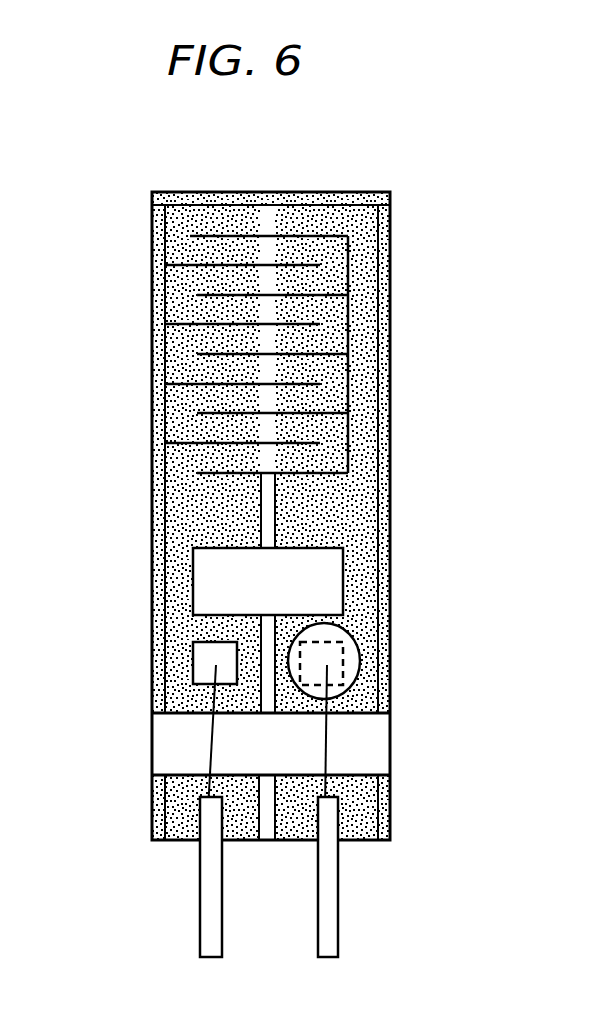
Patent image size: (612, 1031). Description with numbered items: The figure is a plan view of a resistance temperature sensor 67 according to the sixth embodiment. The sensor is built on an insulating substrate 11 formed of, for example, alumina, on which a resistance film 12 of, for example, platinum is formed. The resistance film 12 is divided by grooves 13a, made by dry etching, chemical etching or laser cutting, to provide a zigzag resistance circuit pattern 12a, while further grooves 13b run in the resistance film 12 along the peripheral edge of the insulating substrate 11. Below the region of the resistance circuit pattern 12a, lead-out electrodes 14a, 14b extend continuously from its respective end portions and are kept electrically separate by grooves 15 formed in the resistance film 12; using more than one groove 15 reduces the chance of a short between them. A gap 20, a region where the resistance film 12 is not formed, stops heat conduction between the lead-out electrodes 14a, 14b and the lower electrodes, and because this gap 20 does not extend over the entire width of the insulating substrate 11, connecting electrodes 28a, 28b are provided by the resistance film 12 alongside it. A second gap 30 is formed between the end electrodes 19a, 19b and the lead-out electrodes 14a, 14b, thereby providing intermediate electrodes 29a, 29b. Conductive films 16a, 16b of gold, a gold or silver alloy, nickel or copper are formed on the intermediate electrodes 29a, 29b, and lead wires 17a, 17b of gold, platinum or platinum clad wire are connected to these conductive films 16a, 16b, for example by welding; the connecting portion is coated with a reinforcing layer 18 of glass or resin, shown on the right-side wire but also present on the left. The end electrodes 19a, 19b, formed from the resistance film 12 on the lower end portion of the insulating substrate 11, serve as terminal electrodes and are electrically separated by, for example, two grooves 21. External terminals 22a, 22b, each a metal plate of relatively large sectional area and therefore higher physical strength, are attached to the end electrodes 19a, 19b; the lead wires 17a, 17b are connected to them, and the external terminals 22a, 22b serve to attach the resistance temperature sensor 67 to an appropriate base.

The resistance temperature sensor 67 is at (470, 144).
The insulating substrate 11 is at (398, 242).
The resistance film 12 is at (267, 459).
The resistance circuit pattern 12a is at (340, 281).
The grooves 13a is at (183, 323).
The grooves 13b is at (197, 192).
The lead-out electrode 14a is at (207, 523).
The lead-out electrode 14b is at (335, 528).
The grooves 15 is at (258, 505).
The gap 20 is at (338, 562).
The connecting electrode 28a is at (177, 580).
The connecting electrode 28b is at (367, 592).
The conductive film 16a is at (205, 658).
The conductive film 16b is at (337, 648).
The reinforcing layer 18 is at (347, 678).
The intermediate electrode 29a is at (177, 697).
The intermediate electrode 29b is at (373, 705).
The second gap 30 is at (363, 750).
The lead wire 17a is at (207, 750).
The lead wire 17b is at (330, 762).
The end electrode 19a is at (167, 808).
The end electrode 19b is at (367, 813).
The grooves 21 is at (258, 805).
The external terminal 22a is at (207, 883).
The external terminal 22b is at (328, 903).